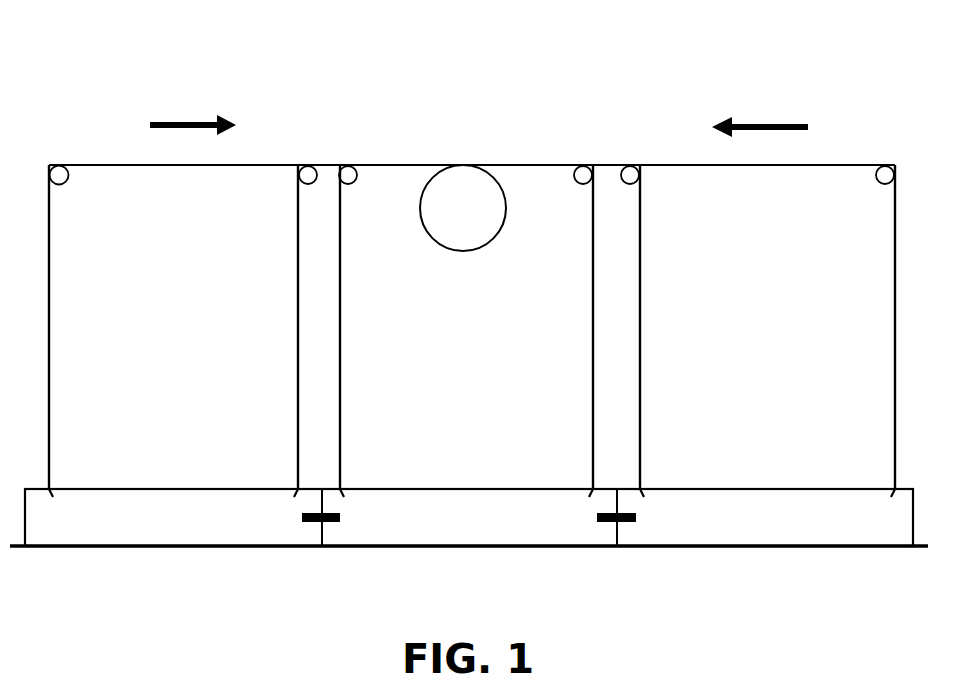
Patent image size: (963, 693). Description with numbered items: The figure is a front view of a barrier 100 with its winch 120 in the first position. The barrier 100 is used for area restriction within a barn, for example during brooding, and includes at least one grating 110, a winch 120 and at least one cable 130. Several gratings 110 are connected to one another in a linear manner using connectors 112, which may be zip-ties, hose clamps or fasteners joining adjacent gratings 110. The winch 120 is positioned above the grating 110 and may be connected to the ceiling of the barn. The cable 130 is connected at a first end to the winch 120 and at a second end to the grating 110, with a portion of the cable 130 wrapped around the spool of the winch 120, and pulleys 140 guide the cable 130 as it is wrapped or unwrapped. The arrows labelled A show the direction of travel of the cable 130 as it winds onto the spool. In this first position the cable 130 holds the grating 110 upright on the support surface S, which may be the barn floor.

The barrier 100 is at (106, 80).
The grating 110 is at (208, 528).
The connector 112 is at (307, 522).
The winch 120 is at (473, 163).
The cable 130 is at (377, 163).
The pulley 140 is at (60, 170).
The support surface S is at (17, 548).